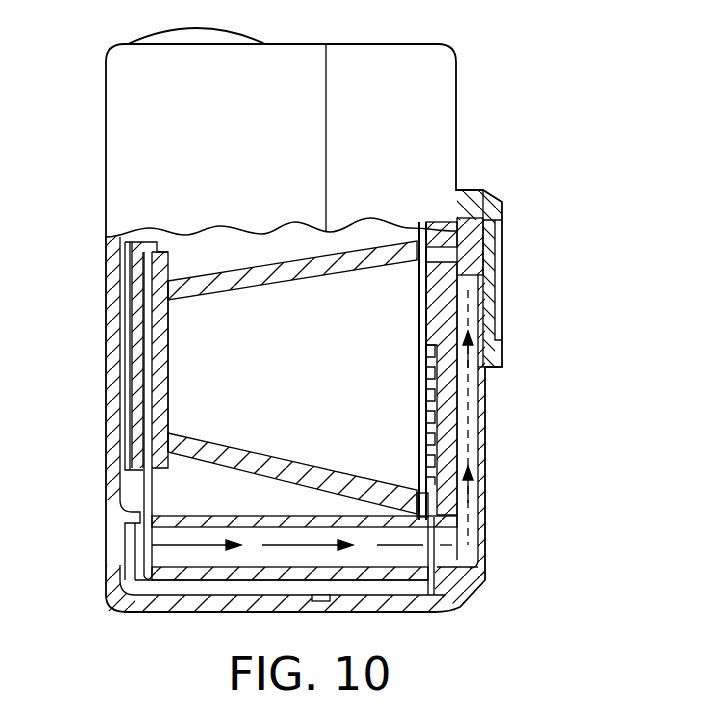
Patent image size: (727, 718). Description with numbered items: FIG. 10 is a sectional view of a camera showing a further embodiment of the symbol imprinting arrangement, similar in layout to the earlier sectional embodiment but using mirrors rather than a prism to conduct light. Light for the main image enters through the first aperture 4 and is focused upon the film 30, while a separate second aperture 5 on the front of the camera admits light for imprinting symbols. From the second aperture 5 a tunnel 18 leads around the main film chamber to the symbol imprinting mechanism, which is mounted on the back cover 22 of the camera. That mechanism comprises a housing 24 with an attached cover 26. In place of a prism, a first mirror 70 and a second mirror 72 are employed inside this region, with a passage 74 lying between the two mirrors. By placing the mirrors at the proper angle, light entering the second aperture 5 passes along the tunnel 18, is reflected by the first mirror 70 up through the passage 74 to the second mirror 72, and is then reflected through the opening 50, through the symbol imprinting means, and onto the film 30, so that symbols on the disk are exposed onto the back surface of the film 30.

The back cover 22 is at (458, 152).
The film 30 is at (430, 243).
The opening 50 is at (473, 277).
The second mirror 72 is at (500, 281).
The cover 26 is at (505, 333).
The housing 24 is at (498, 411).
The passage 74 is at (484, 442).
The first mirror 70 is at (452, 556).
The first aperture 4 is at (157, 358).
The second aperture 5 is at (112, 545).
The tunnel 18 is at (175, 560).